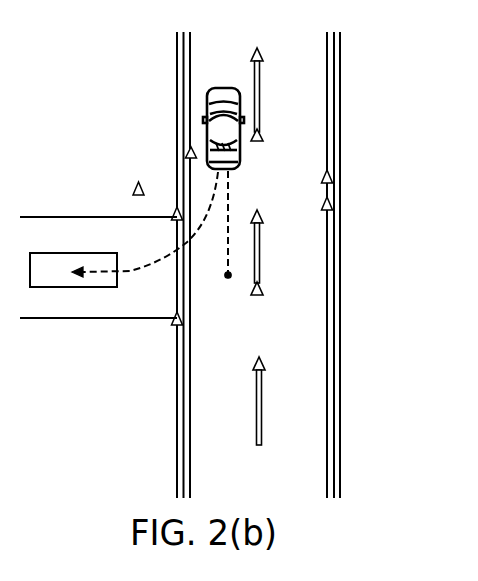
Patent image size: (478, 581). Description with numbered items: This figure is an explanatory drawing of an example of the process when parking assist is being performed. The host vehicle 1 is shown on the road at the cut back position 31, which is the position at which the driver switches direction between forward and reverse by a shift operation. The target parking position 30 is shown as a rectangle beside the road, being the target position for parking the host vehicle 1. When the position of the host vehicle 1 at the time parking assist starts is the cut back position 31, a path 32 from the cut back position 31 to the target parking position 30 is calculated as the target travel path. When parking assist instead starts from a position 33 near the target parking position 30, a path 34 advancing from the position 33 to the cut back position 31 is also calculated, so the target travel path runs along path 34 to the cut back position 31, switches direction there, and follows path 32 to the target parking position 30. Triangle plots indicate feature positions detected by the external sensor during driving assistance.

The host vehicle 1 is at (223, 103).
The cut back position 31 is at (220, 87).
The target parking position 30 is at (53, 253).
The path 32 is at (128, 273).
The position 33 is at (227, 282).
The path 34 is at (229, 191).